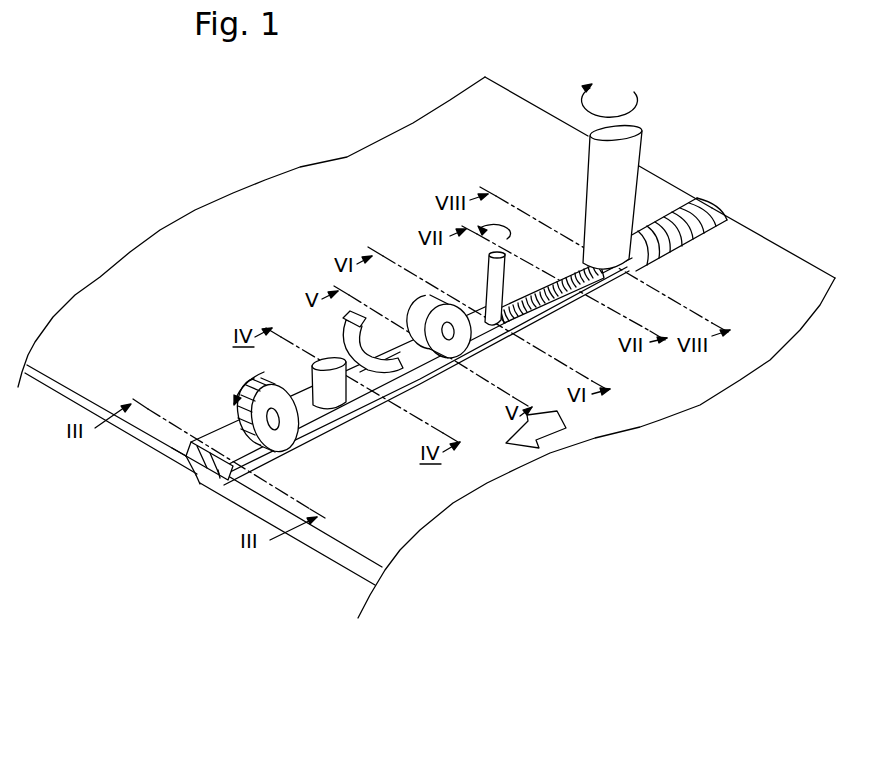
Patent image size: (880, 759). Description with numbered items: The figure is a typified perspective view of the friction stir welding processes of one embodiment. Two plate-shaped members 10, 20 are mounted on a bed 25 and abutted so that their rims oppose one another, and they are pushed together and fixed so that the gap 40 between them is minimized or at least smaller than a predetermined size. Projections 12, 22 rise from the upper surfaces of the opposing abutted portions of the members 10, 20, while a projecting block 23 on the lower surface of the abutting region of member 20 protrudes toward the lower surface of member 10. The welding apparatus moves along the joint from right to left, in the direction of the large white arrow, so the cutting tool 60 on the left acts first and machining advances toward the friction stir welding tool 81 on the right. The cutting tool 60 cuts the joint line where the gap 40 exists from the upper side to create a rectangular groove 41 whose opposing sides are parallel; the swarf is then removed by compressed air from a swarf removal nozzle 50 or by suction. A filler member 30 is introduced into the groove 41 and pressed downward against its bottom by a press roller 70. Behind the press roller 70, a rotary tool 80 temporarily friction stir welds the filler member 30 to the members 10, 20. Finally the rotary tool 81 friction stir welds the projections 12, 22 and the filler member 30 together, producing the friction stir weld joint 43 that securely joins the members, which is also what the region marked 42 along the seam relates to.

The plate-shaped member 10 is at (246, 275).
The projection 12 is at (230, 433).
The plate-shaped member 20 is at (680, 398).
The projection 22 is at (278, 450).
The projecting block 23 is at (196, 480).
The bed 25 is at (185, 575).
The filler member 30 is at (366, 324).
The gap 40 is at (185, 456).
The groove 41 is at (370, 388).
The preliminarily joined portion 42 is at (563, 307).
The friction stir weld joint 43 is at (706, 212).
The swarf removal nozzle 50 is at (323, 372).
The cutting tool 60 is at (264, 371).
The press roller 70 is at (437, 300).
The rotary tool 80 is at (507, 260).
The friction stir welding tool 81 is at (637, 158).